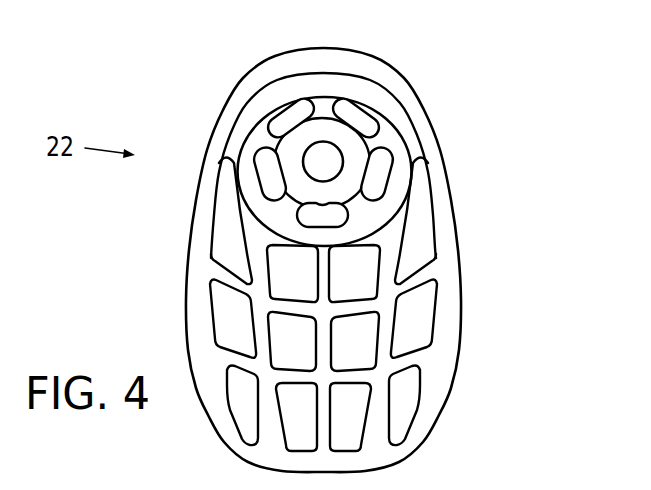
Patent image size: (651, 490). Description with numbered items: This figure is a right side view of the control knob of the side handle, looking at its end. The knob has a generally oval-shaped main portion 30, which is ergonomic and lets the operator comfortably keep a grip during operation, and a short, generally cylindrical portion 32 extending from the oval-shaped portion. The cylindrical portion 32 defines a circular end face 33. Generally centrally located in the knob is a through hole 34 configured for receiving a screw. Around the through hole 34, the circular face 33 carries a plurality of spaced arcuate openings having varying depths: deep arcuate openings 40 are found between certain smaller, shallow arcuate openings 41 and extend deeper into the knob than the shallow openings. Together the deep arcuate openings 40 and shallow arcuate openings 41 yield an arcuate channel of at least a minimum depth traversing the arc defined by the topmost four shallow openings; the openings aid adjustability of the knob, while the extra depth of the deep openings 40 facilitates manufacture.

The oval-shaped main portion 30 is at (436, 354).
The cylindrical portion 32 is at (417, 99).
The circular end face 33 is at (400, 172).
The through hole 34 is at (324, 160).
The deep arcuate openings 40 is at (354, 113).
The shallow arcuate openings 41 is at (318, 108).